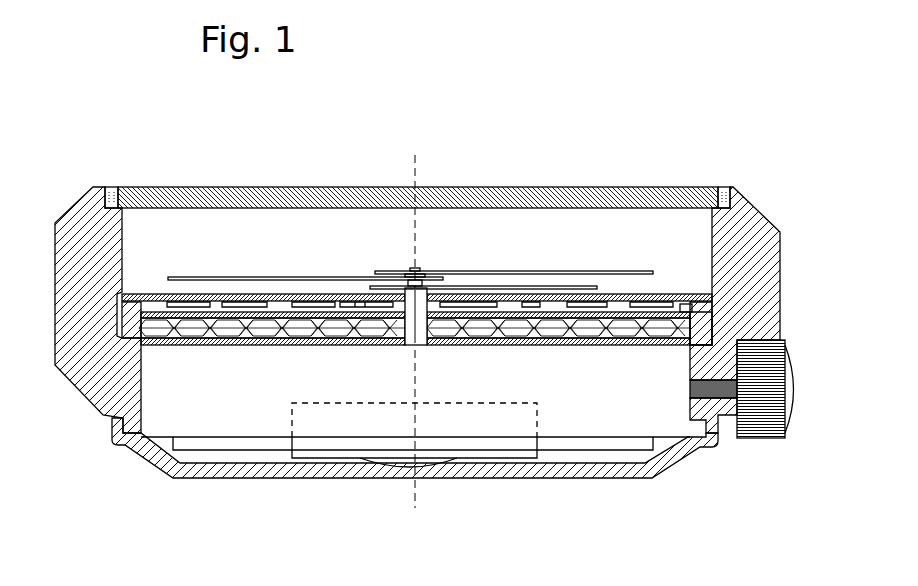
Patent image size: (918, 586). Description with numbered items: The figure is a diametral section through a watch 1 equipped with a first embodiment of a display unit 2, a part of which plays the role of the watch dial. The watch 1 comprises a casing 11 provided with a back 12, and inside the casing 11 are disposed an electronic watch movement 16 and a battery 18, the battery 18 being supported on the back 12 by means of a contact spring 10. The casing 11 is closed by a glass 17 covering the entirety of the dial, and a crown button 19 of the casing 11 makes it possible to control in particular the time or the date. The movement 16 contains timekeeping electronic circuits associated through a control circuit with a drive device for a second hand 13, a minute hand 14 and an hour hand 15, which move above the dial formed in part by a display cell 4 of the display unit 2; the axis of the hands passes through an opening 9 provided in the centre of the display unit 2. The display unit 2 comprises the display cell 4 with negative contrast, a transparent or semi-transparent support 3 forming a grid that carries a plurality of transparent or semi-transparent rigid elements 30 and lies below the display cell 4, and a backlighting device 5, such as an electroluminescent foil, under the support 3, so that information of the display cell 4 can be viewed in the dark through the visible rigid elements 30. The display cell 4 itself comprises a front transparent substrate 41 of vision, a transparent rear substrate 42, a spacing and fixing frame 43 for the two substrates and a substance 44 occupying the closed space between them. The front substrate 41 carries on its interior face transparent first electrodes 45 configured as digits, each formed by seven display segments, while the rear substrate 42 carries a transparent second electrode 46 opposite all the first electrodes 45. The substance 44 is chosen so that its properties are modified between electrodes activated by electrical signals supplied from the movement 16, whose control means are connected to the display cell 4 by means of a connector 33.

The watch 1 is at (110, 165).
The display unit 2 is at (114, 313).
The support 3 is at (107, 418).
The display cell 4 is at (154, 293).
The backlighting device 5 is at (237, 348).
The opening 9 is at (406, 319).
The contact spring 10 is at (382, 464).
The casing 11 is at (750, 253).
The back 12 is at (501, 470).
The second hand 13 is at (500, 272).
The minute hand 14 is at (292, 278).
The hour hand 15 is at (550, 288).
The electronic watch movement 16 is at (618, 392).
The glass 17 is at (566, 192).
The battery 18 is at (317, 455).
The crown button 19 is at (763, 413).
The rigid elements 30 is at (107, 367).
The connector 33 is at (126, 290).
The front transparent substrate 41 is at (657, 299).
The rear substrate 42 is at (712, 318).
The spacing and fixing frame 43 is at (160, 306).
The substance 44 is at (718, 307).
The first electrodes 45 is at (635, 300).
The second electrode 46 is at (186, 334).